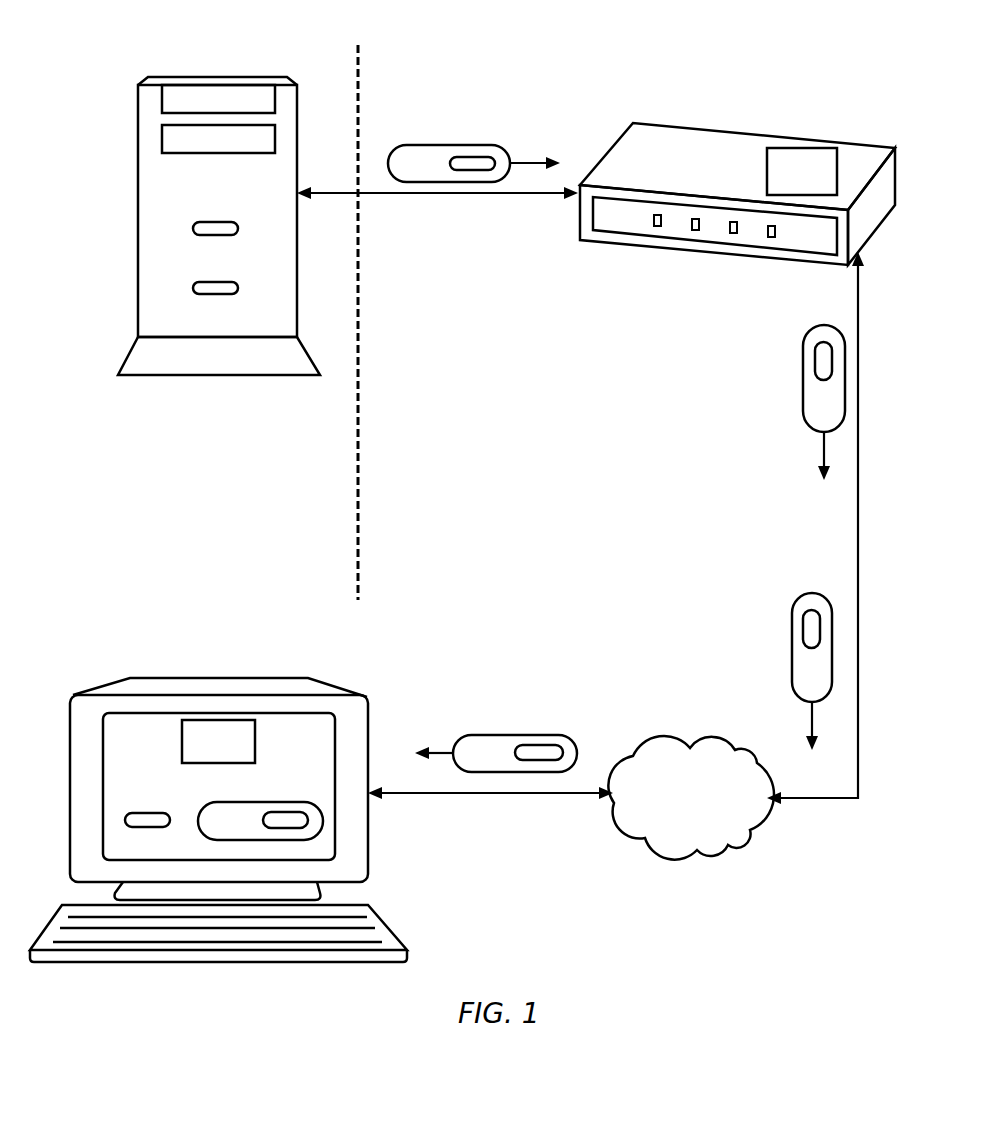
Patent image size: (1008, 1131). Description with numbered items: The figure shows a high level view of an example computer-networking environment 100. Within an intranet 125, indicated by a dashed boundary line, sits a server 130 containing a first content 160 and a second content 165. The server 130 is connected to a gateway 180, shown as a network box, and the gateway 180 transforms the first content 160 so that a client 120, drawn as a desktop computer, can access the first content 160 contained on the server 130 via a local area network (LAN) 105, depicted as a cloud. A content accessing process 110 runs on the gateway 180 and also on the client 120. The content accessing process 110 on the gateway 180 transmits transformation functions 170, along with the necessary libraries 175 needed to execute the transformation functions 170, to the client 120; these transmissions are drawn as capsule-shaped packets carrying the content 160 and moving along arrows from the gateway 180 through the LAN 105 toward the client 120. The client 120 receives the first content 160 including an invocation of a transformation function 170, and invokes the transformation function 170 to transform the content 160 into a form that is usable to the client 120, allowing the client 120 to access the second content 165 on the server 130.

The computer-networking environment 100 is at (578, 71).
The local area network (LAN) 105 is at (672, 793).
The content accessing process 110 is at (786, 182).
The client 120 is at (127, 744).
The intranet 125 is at (329, 322).
The server 130 is at (182, 192).
The first content 160 is at (199, 263).
The second content 165 is at (199, 319).
The transformation function 170 is at (242, 791).
The libraries 175 is at (127, 797).
The gateway 180 is at (704, 172).